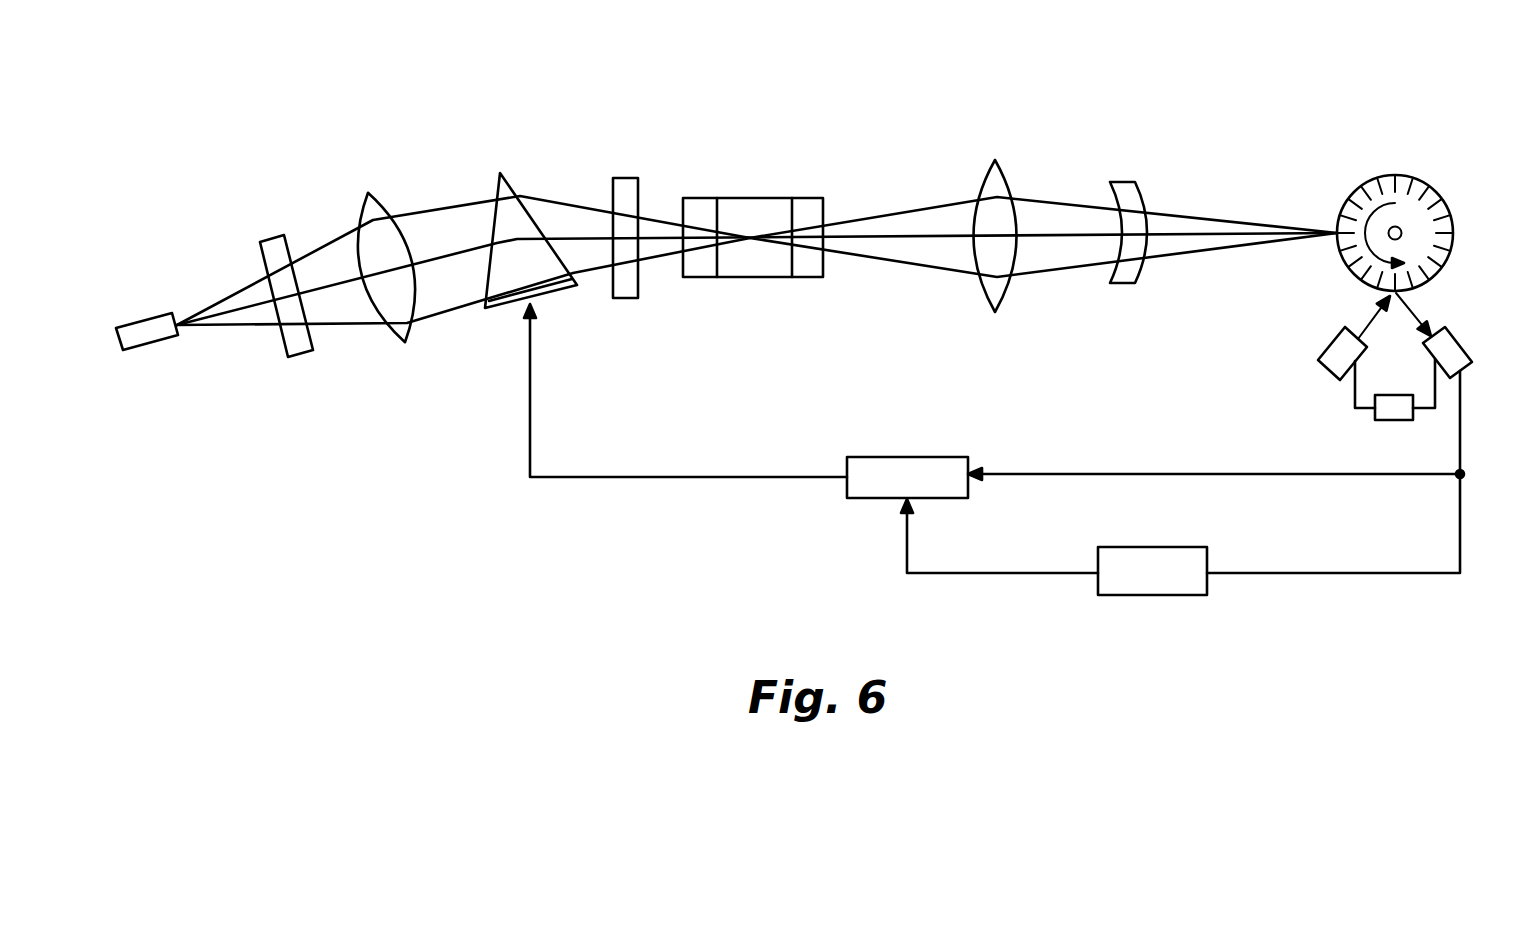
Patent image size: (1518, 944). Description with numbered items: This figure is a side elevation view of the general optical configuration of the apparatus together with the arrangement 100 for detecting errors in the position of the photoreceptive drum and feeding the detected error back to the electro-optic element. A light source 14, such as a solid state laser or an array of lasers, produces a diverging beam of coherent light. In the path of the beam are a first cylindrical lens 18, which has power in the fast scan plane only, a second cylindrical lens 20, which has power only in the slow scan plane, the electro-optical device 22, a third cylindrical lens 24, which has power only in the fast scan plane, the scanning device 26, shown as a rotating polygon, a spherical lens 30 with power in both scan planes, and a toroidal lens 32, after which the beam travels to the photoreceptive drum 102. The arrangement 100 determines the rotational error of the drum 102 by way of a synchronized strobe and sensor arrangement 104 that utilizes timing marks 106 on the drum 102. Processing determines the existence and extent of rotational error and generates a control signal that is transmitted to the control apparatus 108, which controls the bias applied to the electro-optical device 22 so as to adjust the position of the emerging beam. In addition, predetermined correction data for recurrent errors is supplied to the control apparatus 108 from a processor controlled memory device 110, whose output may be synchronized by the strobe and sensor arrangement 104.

The arrangement 100 is at (1094, 76).
The light source 14 is at (160, 317).
The first cylindrical lens 18 is at (273, 252).
The second cylindrical lens 20 is at (368, 208).
The electro-optical device 22 is at (508, 183).
The third cylindrical lens 24 is at (627, 192).
The scanning device 26 is at (753, 195).
The spherical lens 30 is at (993, 285).
The toroidal lens 32 is at (1127, 272).
The photoreceptive drum 102 is at (1368, 182).
The synchronized strobe and sensor arrangement 104 is at (1301, 317).
The timing marks 106 is at (1412, 182).
The control apparatus 108 is at (918, 458).
The processor controlled memory device 110 is at (1158, 552).